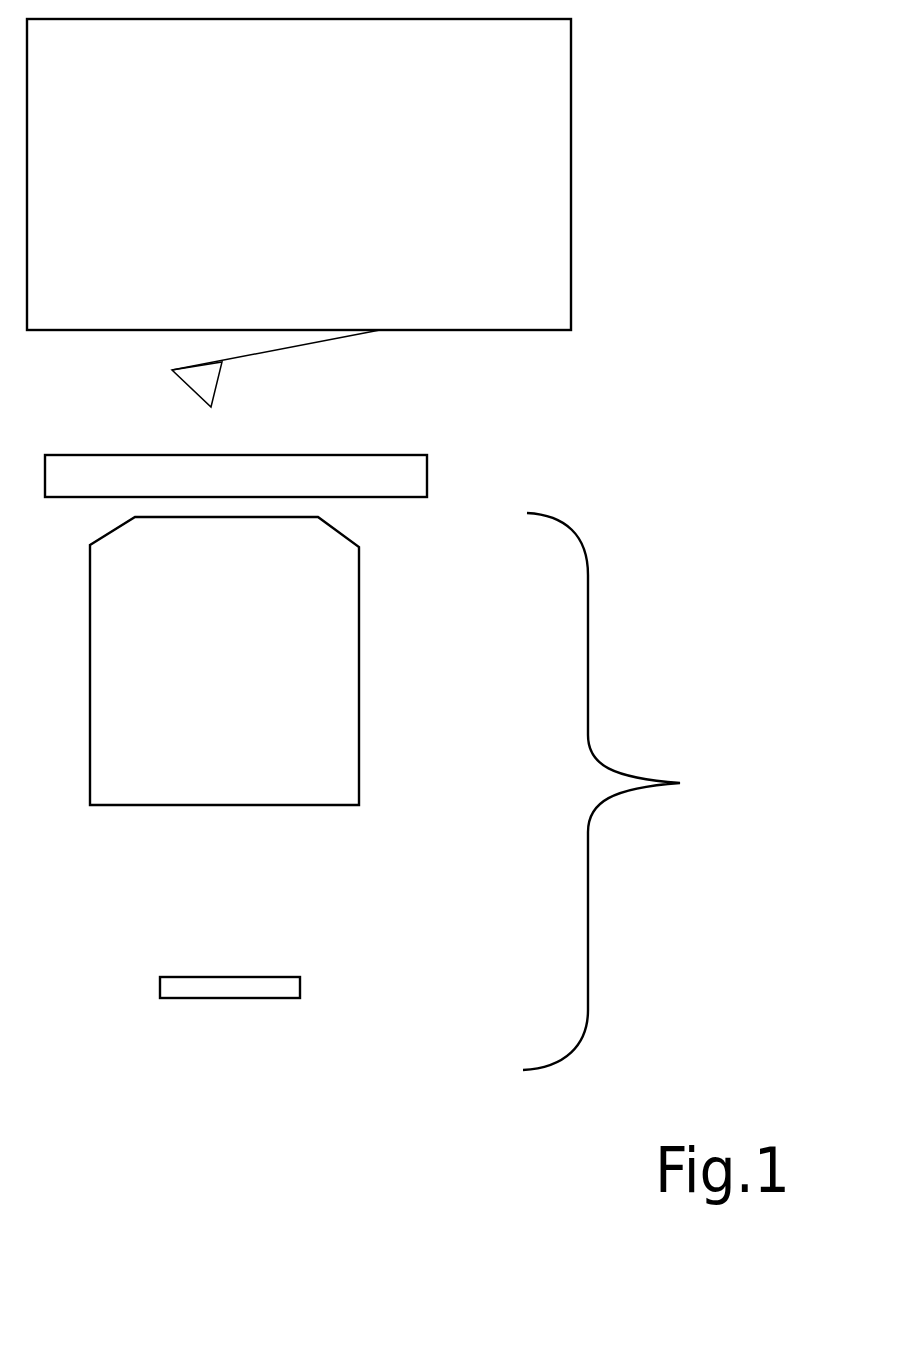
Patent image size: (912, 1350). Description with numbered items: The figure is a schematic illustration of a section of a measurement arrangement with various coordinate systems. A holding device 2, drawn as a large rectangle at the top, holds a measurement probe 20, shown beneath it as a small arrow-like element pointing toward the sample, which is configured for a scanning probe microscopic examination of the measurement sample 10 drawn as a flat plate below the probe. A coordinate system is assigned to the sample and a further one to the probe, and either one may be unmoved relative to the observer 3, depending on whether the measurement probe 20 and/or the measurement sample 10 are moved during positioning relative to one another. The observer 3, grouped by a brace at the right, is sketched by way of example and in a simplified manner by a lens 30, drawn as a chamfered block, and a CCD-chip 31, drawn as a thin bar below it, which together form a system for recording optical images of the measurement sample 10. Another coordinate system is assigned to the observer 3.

The holding device 2 is at (550, 240).
The measurement probe 20 is at (258, 357).
The measurement sample 10 is at (410, 480).
The lens 30 is at (333, 698).
The CCD-chip 31 is at (290, 990).
The observer 3 is at (626, 791).